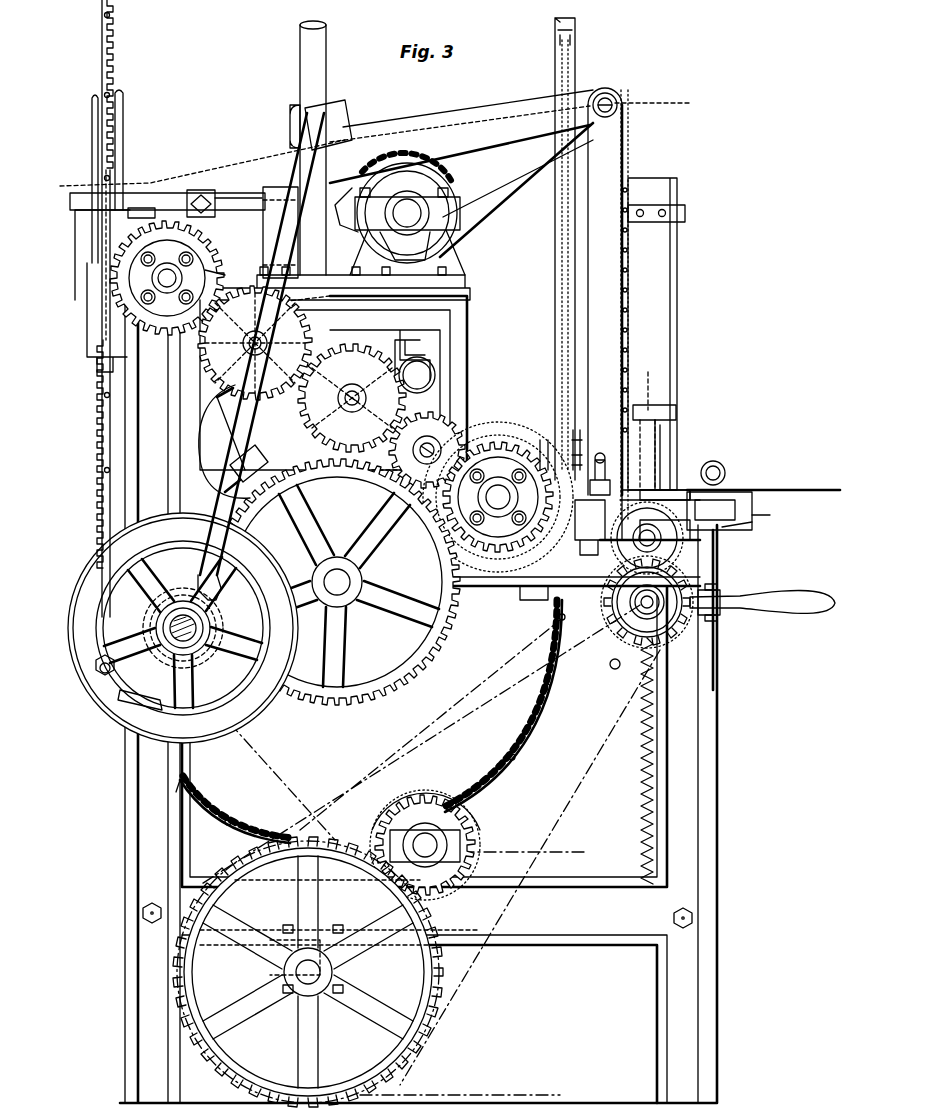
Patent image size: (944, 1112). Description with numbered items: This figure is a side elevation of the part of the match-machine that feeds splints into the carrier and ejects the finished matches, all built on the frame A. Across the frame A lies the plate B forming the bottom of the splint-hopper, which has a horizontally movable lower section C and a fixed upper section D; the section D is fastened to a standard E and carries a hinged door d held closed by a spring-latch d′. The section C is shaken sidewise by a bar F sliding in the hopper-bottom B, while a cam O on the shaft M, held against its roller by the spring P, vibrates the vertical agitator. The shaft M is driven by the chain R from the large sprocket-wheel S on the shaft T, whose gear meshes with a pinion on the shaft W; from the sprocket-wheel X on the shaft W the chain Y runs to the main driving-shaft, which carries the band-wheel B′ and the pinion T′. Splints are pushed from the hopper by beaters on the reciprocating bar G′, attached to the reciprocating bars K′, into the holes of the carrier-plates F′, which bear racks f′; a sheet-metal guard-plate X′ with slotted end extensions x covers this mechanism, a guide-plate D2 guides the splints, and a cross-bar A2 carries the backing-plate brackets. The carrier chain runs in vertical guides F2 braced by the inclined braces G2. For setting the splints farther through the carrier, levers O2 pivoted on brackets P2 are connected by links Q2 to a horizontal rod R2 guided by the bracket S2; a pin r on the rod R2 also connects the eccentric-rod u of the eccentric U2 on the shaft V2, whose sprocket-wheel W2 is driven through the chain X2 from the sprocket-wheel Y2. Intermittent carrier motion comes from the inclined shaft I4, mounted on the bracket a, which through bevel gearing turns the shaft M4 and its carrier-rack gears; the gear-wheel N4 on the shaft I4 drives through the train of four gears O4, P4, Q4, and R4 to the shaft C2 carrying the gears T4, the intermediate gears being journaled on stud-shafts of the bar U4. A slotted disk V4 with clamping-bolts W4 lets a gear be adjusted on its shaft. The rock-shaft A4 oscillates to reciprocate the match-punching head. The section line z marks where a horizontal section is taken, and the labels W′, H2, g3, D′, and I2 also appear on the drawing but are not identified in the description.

The frame A is at (180, 450).
The carrier-plates F′ is at (105, 428).
The racks on the carrier-plates f′ is at (556, 52).
The section line z z is at (380, 155).
The pivot stud or pin r is at (203, 202).
The horizontal rod R2 is at (180, 198).
The shaft T is at (118, 193).
The bracket S2 is at (273, 240).
The link Q2 is at (492, 118).
The sprocket-wheel W2 is at (426, 165).
The brace G2 is at (503, 205).
The levers O2 is at (605, 291).
The vertical side guides F2 is at (556, 294).
The eccentric U2 is at (378, 182).
The shaft V2 is at (407, 213).
The eccentric-rod u is at (350, 205).
The upper fixed hopper-section D is at (652, 334).
The spring-latch d′ is at (686, 214).
The door d is at (649, 412).
The vertical extensions of the guard-plate x is at (650, 685).
The standard or bracket E is at (647, 520).
The bar F is at (440, 655).
The lower horizontally-movable hopper-section C is at (670, 458).
The plate B is at (672, 484).
The ring W′ is at (713, 460).
The reciprocating head or bar G′ is at (735, 495).
The guard-plate X′ is at (778, 490).
The horizontally-reciprocating bars K′ is at (755, 520).
The bracket H2 is at (655, 605).
The guide-plate D2 is at (587, 536).
The brackets P2 is at (590, 475).
The spring catch g3 is at (576, 440).
The shaft M is at (640, 610).
The cam O is at (640, 625).
The handle D′ is at (760, 600).
The spring P is at (640, 740).
The sprocket-chain R is at (570, 795).
The sprocket-wheel S is at (438, 655).
The gear-wheel N4 is at (118, 300).
The horizontal shaft and gears M4 is at (167, 270).
The disk V4 is at (332, 388).
The clamping-bolts W4 is at (500, 490).
The gear O4 is at (255, 343).
The gear P4 is at (352, 398).
The bar U4 is at (408, 417).
The rock-shaft A4 is at (440, 375).
The driving-chain X2 is at (445, 340).
The cross-bar A2 is at (530, 574).
The gear Q4 is at (475, 445).
The gear R4 is at (500, 480).
The shaft C2 is at (540, 445).
The gears T4 is at (548, 465).
The pitch circle I2 is at (470, 550).
The bracket a is at (227, 433).
The inclined shaft I4 is at (215, 425).
The shaft W is at (455, 832).
The sprocket-wheel X is at (405, 800).
The chain Y is at (370, 722).
The driving sprocket-wheel Y2 is at (380, 628).
The pinion T′ is at (180, 600).
The band-wheel B′ is at (105, 690).